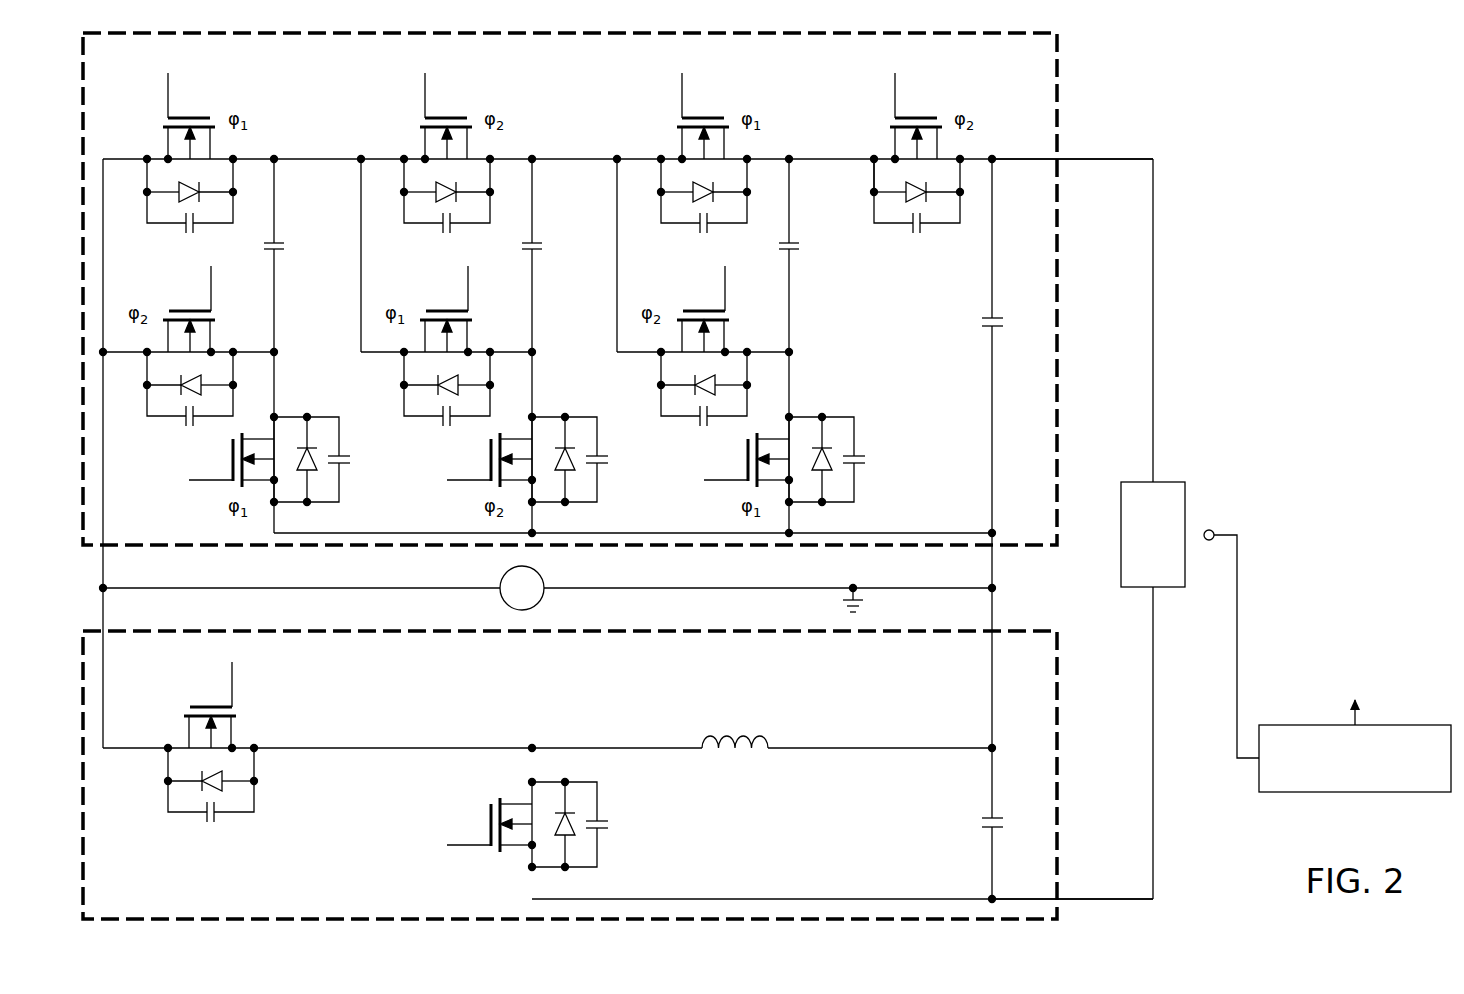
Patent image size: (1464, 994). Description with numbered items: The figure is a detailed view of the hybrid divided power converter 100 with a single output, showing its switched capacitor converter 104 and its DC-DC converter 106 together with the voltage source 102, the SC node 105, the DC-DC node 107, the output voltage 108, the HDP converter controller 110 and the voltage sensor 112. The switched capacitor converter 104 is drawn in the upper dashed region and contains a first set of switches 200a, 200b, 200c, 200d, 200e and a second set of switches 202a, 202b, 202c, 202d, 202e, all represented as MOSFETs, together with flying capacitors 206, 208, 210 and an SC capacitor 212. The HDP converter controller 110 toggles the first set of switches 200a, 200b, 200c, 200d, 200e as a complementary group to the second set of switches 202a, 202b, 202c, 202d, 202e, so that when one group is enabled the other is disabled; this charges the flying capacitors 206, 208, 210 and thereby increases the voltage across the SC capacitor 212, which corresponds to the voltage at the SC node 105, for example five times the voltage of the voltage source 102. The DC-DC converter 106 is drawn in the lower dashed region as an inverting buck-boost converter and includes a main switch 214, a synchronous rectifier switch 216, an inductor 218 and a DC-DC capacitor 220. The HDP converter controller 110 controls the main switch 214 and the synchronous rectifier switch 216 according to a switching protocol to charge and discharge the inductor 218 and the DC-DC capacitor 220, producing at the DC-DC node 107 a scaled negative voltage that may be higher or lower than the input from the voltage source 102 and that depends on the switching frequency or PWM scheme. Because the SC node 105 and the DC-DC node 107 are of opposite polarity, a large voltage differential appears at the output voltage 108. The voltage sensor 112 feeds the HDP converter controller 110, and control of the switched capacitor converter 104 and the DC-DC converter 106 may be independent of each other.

The hybrid divided power (HDP) converter 100 is at (1340, 94).
The voltage source 102 is at (501, 595).
The switched capacitor (SC) converter 104 is at (1062, 261).
The SC node 105 is at (1105, 159).
The DC-DC converter 106 is at (1062, 763).
The DC-DC node 107 is at (1103, 898).
The output voltage 108 is at (1137, 563).
The HDP converter controller 110 is at (1365, 793).
The voltage sensor 112 is at (1212, 530).
The first set of switches 200a is at (199, 103).
The first set of switches 200b is at (222, 456).
The first set of switches 200c is at (429, 298).
The first set of switches 200d is at (713, 103).
The first set of switches 200e is at (737, 456).
The second set of switches 202a is at (171, 298).
The second set of switches 202b is at (456, 103).
The second set of switches 202c is at (480, 456).
The second set of switches 202d is at (685, 298).
The second set of switches 202e is at (928, 103).
The flying capacitor 206 is at (281, 243).
The flying capacitor 208 is at (539, 243).
The flying capacitor 210 is at (796, 243).
The SC capacitor 212 is at (988, 318).
The main switch 214 is at (191, 698).
The synchronous rectifier (SR) switch 216 is at (480, 812).
The inductor 218 is at (758, 738).
The DC-DC capacitor 220 is at (985, 832).